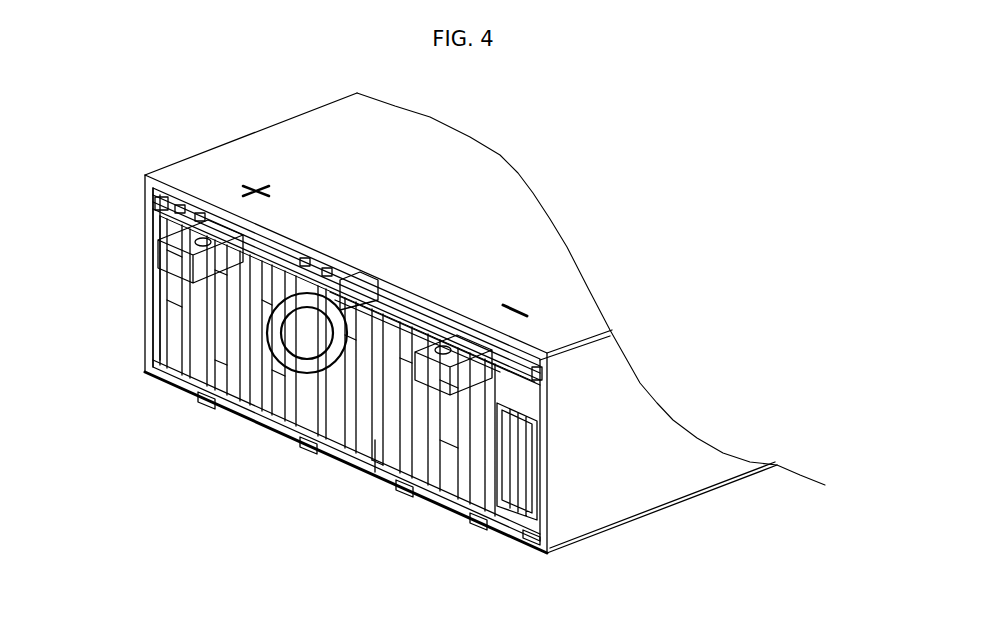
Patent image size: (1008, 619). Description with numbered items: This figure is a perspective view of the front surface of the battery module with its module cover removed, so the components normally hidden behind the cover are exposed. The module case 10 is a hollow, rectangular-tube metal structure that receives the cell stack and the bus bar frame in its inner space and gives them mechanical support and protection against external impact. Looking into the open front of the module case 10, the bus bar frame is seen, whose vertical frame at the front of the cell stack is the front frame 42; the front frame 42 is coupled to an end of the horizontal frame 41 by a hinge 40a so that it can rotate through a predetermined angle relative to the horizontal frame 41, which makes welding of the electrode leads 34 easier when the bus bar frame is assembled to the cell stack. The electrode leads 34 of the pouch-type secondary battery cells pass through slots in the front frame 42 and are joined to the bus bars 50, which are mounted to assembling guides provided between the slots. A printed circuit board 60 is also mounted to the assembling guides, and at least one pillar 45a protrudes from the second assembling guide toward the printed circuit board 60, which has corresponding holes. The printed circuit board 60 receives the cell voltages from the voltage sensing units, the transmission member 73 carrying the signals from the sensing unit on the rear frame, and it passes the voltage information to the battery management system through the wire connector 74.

The module case 10 is at (288, 128).
The horizontal frame 41 is at (178, 187).
The hinge 40a is at (190, 205).
The front frame 42 is at (163, 215).
The electrode lead 34 is at (202, 393).
The bus bar 50 is at (227, 396).
The wire connector 74 is at (357, 287).
The transmission member 73 is at (405, 307).
The printed circuit board 60 is at (375, 473).
The pillar 45a is at (382, 487).